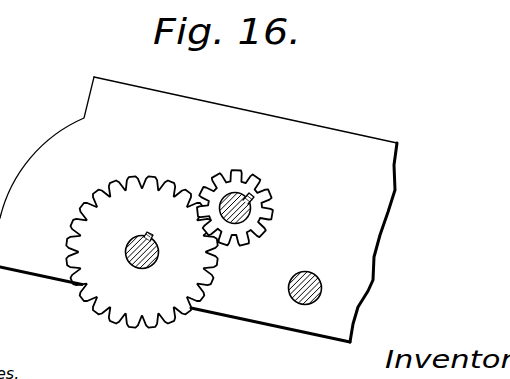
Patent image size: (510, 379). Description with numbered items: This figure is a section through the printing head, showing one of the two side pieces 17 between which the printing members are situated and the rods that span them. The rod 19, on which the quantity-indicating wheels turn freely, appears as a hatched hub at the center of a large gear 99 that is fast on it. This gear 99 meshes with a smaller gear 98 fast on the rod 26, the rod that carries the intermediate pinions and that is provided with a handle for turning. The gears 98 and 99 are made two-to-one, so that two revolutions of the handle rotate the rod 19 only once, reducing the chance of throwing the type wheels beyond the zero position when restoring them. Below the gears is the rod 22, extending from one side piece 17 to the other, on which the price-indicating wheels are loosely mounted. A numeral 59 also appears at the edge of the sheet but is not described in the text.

The side piece 17 is at (380, 190).
The gear 99 is at (97, 305).
The rod 19 is at (152, 268).
The rod 26 is at (270, 203).
The gear 98 is at (243, 175).
The rod 22 is at (322, 282).
The part 59 is at (0, 23).